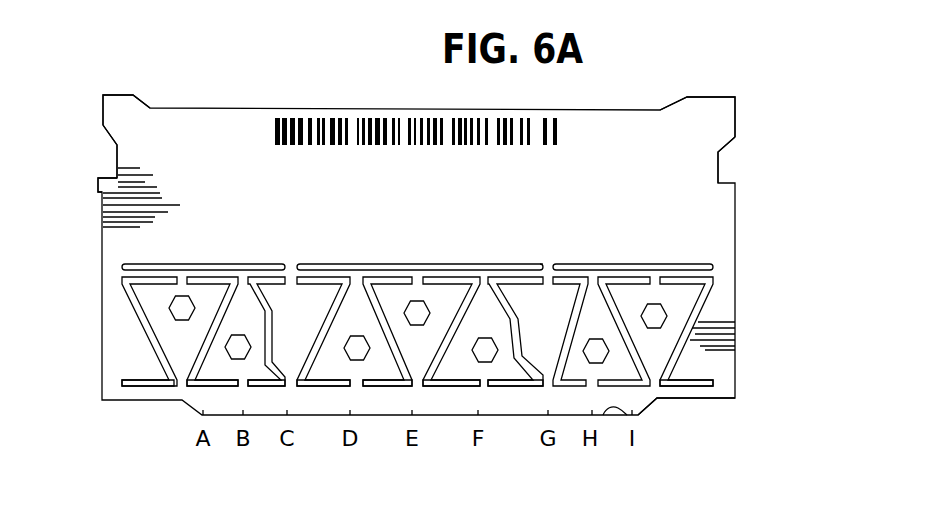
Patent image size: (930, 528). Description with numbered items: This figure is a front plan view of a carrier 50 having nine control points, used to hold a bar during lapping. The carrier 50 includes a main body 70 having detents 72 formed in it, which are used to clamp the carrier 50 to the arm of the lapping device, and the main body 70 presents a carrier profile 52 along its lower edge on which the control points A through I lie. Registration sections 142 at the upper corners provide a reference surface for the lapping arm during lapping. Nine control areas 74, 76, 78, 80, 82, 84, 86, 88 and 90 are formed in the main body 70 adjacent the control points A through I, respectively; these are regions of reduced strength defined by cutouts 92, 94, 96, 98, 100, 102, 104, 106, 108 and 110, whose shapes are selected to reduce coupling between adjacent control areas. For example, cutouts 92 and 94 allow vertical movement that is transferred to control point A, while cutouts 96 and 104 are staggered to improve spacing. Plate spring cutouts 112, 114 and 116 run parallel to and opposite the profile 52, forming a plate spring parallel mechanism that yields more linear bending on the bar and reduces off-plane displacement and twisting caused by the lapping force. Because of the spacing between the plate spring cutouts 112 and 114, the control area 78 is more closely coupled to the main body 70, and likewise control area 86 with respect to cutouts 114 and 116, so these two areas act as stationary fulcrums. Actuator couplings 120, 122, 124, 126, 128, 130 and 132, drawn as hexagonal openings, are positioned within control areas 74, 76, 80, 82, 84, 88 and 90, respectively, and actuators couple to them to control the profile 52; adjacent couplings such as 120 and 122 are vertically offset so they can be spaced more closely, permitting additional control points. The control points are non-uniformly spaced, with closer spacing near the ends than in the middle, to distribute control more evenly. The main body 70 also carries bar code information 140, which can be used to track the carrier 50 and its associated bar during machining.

The carrier 50 is at (684, 78).
The carrier profile 52 is at (605, 416).
The main body 70 is at (98, 189).
The detents 72 is at (117, 157).
The control area 74 is at (148, 290).
The control area 76 is at (247, 282).
The control area 78 is at (278, 280).
The control area 80 is at (353, 295).
The control area 82 is at (414, 291).
The control area 84 is at (493, 276).
The control area 86 is at (544, 264).
The control area 88 is at (605, 290).
The control area 90 is at (682, 292).
The cutout 92 is at (166, 386).
The cutout 94 is at (197, 383).
The cutout 96 is at (263, 386).
The cutout 98 is at (330, 386).
The cutout 100 is at (380, 386).
The cutout 102 is at (465, 386).
The cutout 104 is at (525, 387).
The cutout 106 is at (573, 387).
The cutout 108 is at (648, 407).
The cutout 110 is at (708, 387).
The plate spring cutout 112 is at (228, 282).
The plate spring cutout 114 is at (350, 277).
The plate spring cutout 116 is at (680, 268).
The actuator coupling 120 is at (170, 310).
The actuator coupling 122 is at (226, 346).
The actuator coupling 124 is at (357, 362).
The actuator coupling 126 is at (418, 325).
The actuator coupling 128 is at (485, 362).
The actuator coupling 130 is at (612, 348).
The actuator coupling 132 is at (668, 307).
The bar code information 140 is at (431, 128).
The registration sections 142 is at (117, 95).